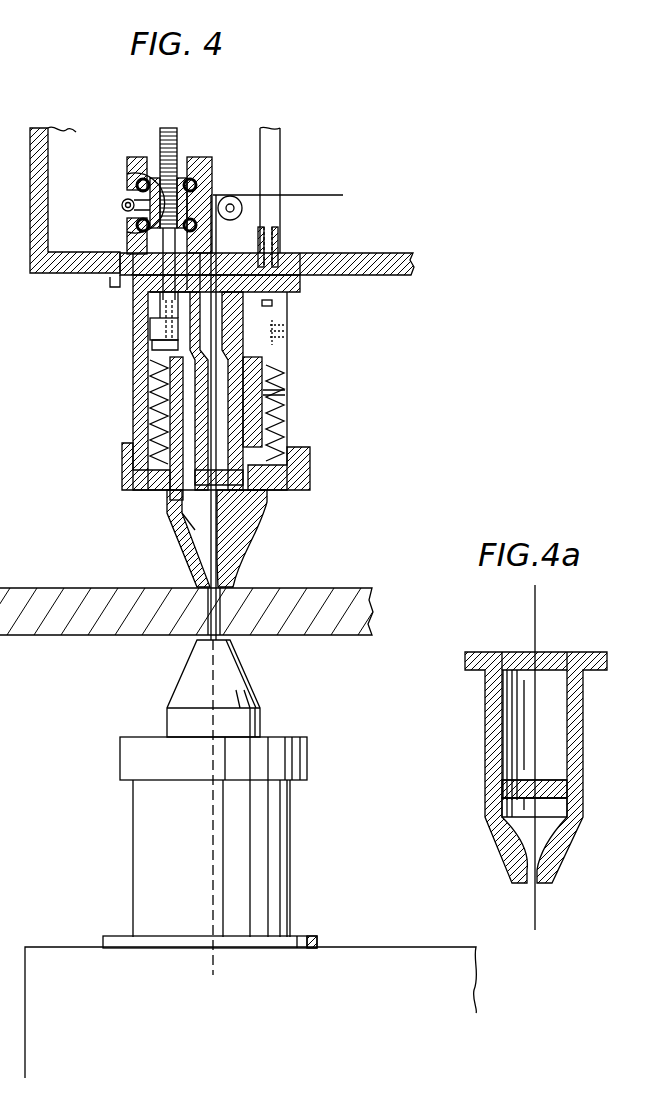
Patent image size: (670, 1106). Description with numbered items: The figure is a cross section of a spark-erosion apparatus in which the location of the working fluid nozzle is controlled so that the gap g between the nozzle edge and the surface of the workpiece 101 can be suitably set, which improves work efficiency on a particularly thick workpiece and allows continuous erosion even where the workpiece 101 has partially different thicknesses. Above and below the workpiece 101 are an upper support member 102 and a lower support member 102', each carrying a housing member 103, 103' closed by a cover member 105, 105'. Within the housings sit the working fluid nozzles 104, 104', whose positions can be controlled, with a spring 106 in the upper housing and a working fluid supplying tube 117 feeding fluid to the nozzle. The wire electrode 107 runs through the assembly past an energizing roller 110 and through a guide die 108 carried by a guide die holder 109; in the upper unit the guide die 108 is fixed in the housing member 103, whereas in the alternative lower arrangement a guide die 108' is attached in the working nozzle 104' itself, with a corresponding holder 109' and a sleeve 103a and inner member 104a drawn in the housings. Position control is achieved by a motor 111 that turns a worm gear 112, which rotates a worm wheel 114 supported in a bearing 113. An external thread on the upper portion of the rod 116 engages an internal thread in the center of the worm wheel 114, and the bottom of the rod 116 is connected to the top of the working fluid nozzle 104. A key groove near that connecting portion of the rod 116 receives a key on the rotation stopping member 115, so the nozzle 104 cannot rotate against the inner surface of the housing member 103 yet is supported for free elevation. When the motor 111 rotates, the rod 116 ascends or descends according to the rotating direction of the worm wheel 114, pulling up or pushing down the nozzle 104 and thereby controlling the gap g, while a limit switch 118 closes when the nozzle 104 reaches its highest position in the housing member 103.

In FIG. 4, the workpiece 101 is at (374, 613).
In FIG. 4, the upper support member 102 is at (268, 292).
In FIG. 4, the lower support member 102' is at (251, 974).
In FIG. 4, the housing member 103 is at (223, 371).
In FIG. 4, the housing member 103' is at (238, 864).
In FIG. 4, the guide sleeve 103a is at (278, 230).
In FIG. 4, the working fluid nozzle 104 is at (253, 538).
In FIG. 4, the working fluid nozzle 104' is at (257, 688).
In FIG. 4, the inner sleeve 104a is at (262, 362).
In FIG. 4, the cover member 105 is at (256, 484).
In FIG. 4, the cover member 105' is at (257, 758).
In FIG. 4, the spring 106 is at (285, 418).
In FIG. 4, the wire electrode 107 is at (335, 195).
In FIG. 4A, the wire electrode 107 is at (538, 624).
In FIG. 4, the guide die 108 is at (283, 458).
In FIG. 4A, the guide die 108' is at (496, 827).
In FIG. 4, the guide die holder 109 is at (314, 390).
In FIG. 4A, the retainer 109' is at (516, 767).
In FIG. 4, the energizing roller 110 is at (231, 196).
In FIG. 4, the motor 111 is at (104, 172).
In FIG. 4, the worm gear 112 is at (110, 200).
In FIG. 4, the bearing 113 is at (203, 157).
In FIG. 4, the worm wheel 114 is at (160, 170).
In FIG. 4, the rotation stopping member 115 is at (150, 330).
In FIG. 4, the rod 116 is at (163, 293).
In FIG. 4, the working fluid supplying tube 117 is at (281, 135).
In FIG. 4, the limit switch 118 is at (285, 340).